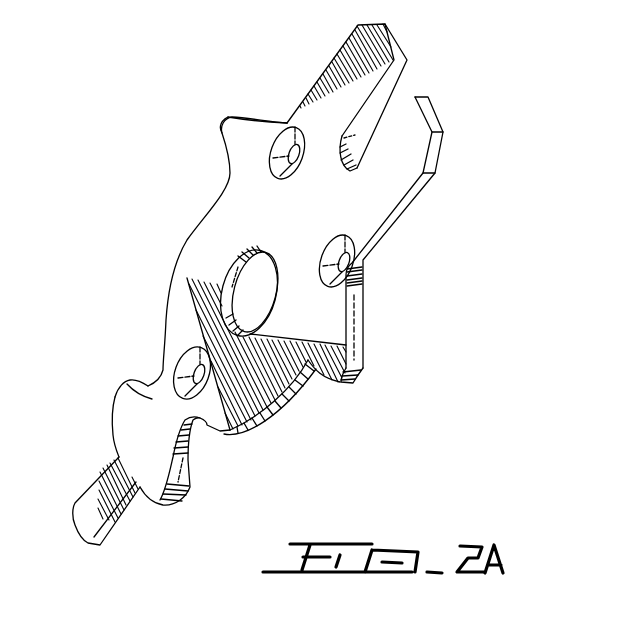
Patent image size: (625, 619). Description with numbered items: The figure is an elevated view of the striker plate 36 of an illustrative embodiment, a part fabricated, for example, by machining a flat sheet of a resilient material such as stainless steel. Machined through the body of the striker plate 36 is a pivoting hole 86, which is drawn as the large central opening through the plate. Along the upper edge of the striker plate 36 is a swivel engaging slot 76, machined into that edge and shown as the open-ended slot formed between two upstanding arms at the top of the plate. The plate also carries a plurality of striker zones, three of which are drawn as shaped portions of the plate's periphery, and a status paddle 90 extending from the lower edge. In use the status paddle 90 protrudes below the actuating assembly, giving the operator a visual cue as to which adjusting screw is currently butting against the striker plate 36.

The striker plate 36 is at (324, 457).
The swivel engaging slot 76 is at (388, 80).
The pivoting hole 86 is at (240, 283).
The status paddle 90 is at (103, 473).